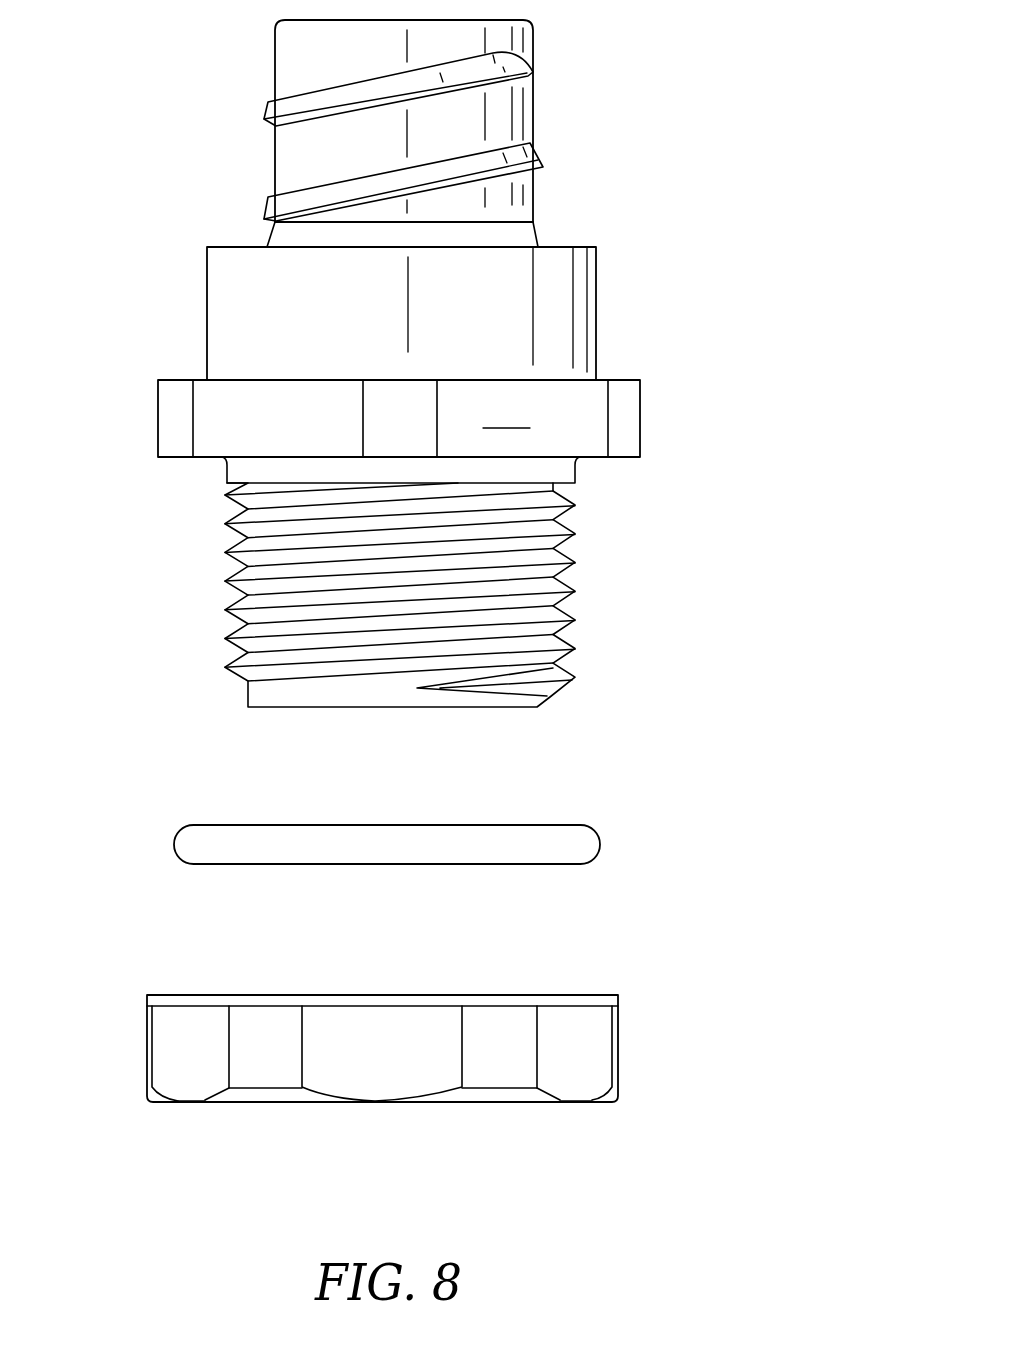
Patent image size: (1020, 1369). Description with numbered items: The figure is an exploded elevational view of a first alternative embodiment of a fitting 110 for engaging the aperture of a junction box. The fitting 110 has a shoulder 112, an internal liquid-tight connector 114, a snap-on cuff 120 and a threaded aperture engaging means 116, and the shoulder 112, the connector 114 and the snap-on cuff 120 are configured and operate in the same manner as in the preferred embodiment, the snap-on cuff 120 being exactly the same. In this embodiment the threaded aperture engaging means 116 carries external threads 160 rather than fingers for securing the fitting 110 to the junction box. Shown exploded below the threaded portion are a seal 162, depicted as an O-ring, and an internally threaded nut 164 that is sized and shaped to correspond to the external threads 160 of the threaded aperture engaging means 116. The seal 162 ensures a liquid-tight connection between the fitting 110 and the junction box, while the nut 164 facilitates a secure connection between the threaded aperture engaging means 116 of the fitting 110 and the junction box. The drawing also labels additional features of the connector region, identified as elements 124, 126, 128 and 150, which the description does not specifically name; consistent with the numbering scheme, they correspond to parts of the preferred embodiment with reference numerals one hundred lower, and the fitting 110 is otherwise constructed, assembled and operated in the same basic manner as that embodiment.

The fitting 110 is at (742, 0).
The shoulder 112 is at (176, 431).
The internal liquid-tight connector 114 is at (560, 104).
The threaded aperture engaging means 116 is at (346, 582).
The snap-on cuff 120 is at (405, 313).
The neck 124 is at (508, 236).
The shoulder 126 is at (535, 238).
The helical fins 128 is at (273, 111).
The body portion 150 is at (243, 288).
The external threads 160 is at (228, 582).
The seal 162 is at (248, 840).
The internally threaded nut 164 is at (178, 1055).